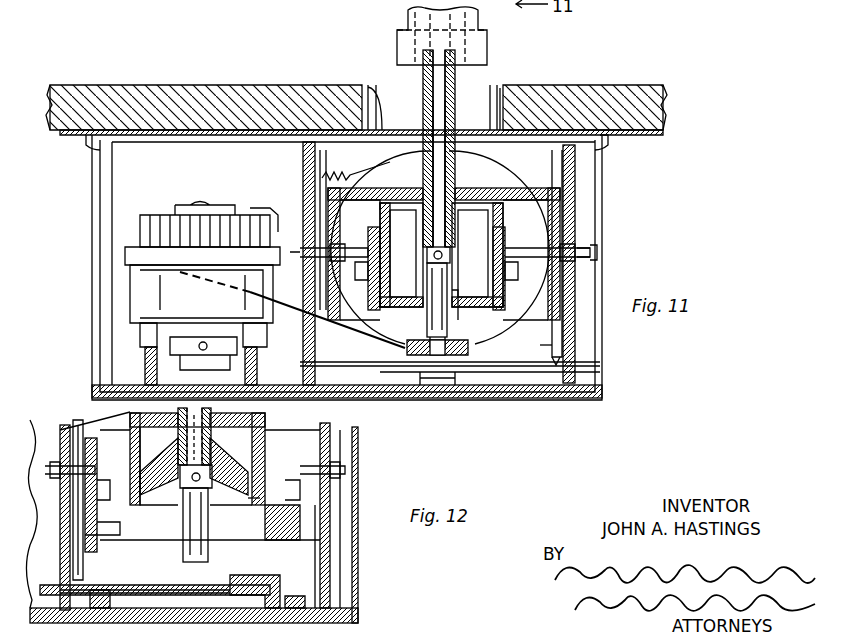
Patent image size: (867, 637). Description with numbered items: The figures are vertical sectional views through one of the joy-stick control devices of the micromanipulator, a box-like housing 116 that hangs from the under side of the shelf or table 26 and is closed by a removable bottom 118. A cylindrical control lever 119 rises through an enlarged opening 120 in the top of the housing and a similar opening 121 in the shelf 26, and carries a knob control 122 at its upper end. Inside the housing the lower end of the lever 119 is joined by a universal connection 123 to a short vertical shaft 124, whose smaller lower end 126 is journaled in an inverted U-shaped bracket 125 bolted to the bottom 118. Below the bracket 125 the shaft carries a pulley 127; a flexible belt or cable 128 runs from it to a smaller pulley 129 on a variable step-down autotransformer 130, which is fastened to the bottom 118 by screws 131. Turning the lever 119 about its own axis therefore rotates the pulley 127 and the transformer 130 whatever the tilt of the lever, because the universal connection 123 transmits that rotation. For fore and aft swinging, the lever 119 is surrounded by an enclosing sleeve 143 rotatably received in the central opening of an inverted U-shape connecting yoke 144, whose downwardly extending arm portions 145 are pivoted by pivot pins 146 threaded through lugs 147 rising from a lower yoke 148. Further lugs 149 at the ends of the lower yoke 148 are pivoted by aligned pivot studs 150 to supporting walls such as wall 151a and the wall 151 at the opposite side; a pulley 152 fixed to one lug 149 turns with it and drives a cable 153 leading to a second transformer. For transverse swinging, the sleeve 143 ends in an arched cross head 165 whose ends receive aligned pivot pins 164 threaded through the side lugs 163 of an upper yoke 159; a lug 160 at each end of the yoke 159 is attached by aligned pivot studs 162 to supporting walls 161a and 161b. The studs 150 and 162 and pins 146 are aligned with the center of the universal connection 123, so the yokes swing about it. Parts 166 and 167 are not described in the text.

In FIG. 11, the shelf or table 26 is at (582, 95).
In FIG. 11, the box-like structure 116 is at (620, 182).
In FIG. 12, the box-like structure 116 is at (370, 448).
In FIG. 11, the removable bottom 118 is at (515, 398).
In FIG. 12, the removable bottom 118 is at (360, 563).
In FIG. 11, the control lever 119 is at (458, 73).
In FIG. 12, the control lever 119 is at (212, 437).
In FIG. 11, the enlarged opening 120 is at (366, 95).
In FIG. 11, the bushing sleeve 121 is at (400, 90).
In FIG. 11, the knob control 122 is at (402, 22).
In FIG. 11, the universal connection 123 is at (426, 266).
In FIG. 12, the universal connection 123 is at (207, 488).
In FIG. 11, the short shaft 124 is at (448, 330).
In FIG. 12, the short shaft 124 is at (182, 520).
In FIG. 11, the inverted U-shaped bracket 125 is at (470, 349).
In FIG. 12, the inverted U-shaped bracket 125 is at (278, 580).
In FIG. 11, the smaller lower end 126 is at (385, 367).
In FIG. 12, the smaller lower end 126 is at (220, 580).
In FIG. 11, the pulley 127 is at (470, 373).
In FIG. 12, the pulley 127 is at (140, 588).
In FIG. 11, the flexible belt or cable 128 is at (352, 345).
In FIG. 12, the flexible belt or cable 128 is at (110, 588).
In FIG. 11, the pulley 129 is at (240, 347).
In FIG. 11, the variable step-down autotransformer 130 is at (147, 200).
In FIG. 11, the screws 131 is at (144, 356).
In FIG. 11, the enclosing sleeve 143 is at (456, 128).
In FIG. 12, the enclosing sleeve 143 is at (205, 420).
In FIG. 11, the inverted U-shape connecting yoke 144 is at (482, 200).
In FIG. 11, the arm portions 145 is at (388, 240).
In FIG. 12, the arm portions 145 is at (197, 448).
In FIG. 11, the pivot pins 146 is at (364, 245).
In FIG. 11, the lugs 147 is at (438, 278).
In FIG. 12, the lugs 147 is at (264, 516).
In FIG. 11, the lower yoke 148 is at (473, 300).
In FIG. 12, the lower yoke 148 is at (303, 515).
In FIG. 11, the lugs 149 is at (455, 252).
In FIG. 12, the lugs 149 is at (105, 425).
In FIG. 12, the pivot studs 150 is at (348, 470).
In FIG. 12, the housing wall 151 is at (58, 592).
In FIG. 12, the supporting wall 151a is at (331, 528).
In FIG. 11, the pulley 152 is at (385, 162).
In FIG. 12, the pulley 152 is at (75, 425).
In FIG. 11, the cable 153 is at (300, 195).
In FIG. 11, the upper yoke 159 is at (470, 188).
In FIG. 12, the upper yoke 159 is at (243, 418).
In FIG. 11, the lug 160 is at (332, 296).
In FIG. 11, the supporting wall 161a is at (578, 232).
In FIG. 11, the supporting wall 161b is at (303, 162).
In FIG. 11, the pivot studs 162 is at (598, 253).
In FIG. 12, the side lugs 163 is at (268, 440).
In FIG. 12, the pivot pins 164 is at (198, 495).
In FIG. 12, the arched cross head 165 is at (210, 522).
In FIG. 11, the spacer 166 is at (535, 328).
In FIG. 11, the foot 167 is at (552, 358).